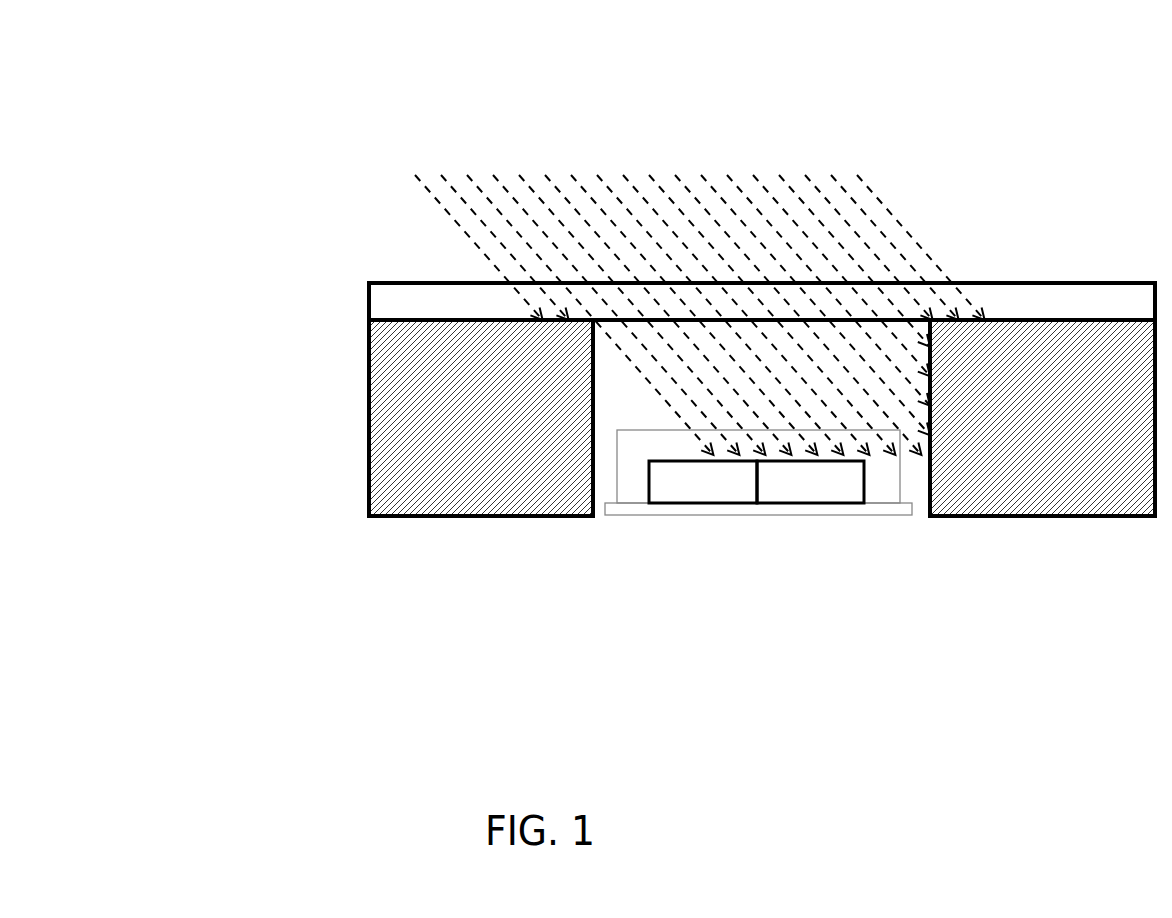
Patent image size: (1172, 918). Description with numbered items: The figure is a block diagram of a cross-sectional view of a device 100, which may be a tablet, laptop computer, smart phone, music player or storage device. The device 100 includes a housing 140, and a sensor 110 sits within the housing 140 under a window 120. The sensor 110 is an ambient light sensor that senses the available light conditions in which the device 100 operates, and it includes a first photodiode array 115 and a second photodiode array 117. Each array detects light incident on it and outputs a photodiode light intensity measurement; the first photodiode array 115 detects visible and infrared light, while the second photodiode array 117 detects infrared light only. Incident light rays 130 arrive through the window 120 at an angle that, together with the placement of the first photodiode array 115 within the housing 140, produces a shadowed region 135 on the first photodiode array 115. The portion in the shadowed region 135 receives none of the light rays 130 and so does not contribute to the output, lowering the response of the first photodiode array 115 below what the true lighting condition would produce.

The device 100 is at (165, 118).
The sensor 110 is at (653, 551).
The first photodiode array 115 is at (729, 495).
The second photodiode array 117 is at (841, 495).
The window 120 is at (1006, 283).
The incident light rays 130 is at (700, 267).
The shadowed region 135 is at (650, 414).
The housing 140 is at (495, 390).